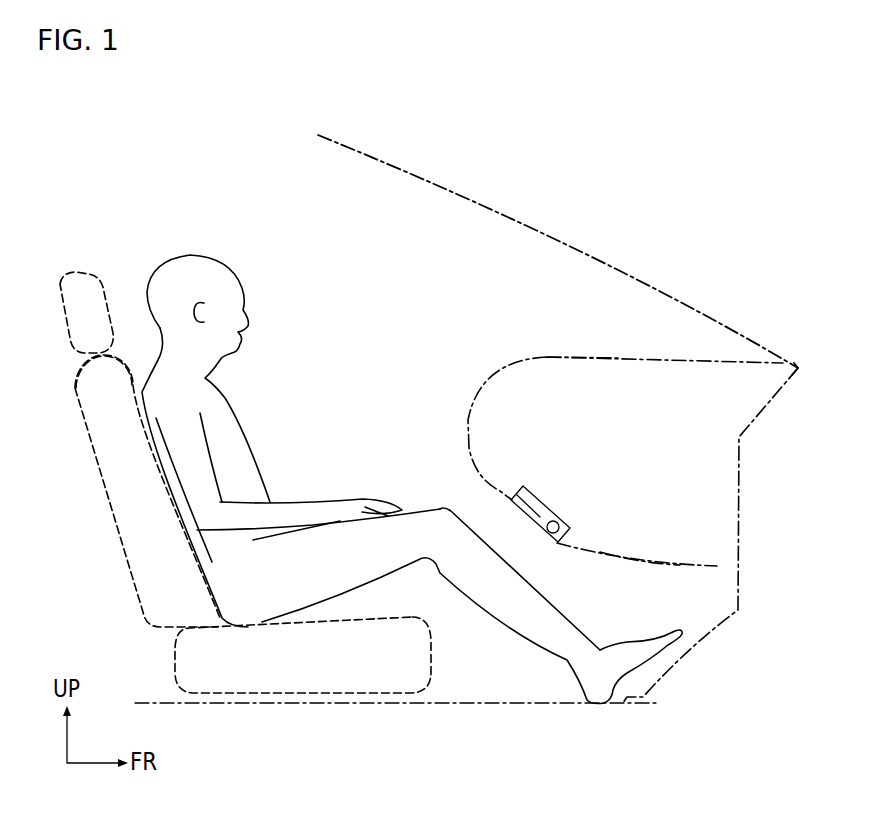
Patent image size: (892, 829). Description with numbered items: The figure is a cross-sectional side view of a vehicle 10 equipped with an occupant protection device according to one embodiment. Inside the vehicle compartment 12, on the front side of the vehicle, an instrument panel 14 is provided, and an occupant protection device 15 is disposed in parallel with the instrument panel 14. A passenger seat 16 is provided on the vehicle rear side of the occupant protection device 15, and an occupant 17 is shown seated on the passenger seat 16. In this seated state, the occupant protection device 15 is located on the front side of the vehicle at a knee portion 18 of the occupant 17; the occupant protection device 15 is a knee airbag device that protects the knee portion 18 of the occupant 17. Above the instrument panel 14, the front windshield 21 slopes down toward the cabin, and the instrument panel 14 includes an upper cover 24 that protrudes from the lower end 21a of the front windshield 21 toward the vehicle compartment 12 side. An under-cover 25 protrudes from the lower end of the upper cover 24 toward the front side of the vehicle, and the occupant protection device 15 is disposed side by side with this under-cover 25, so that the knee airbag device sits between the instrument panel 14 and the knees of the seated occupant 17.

The vehicle 10 is at (577, 124).
The vehicle compartment 12 is at (395, 289).
The instrument panel 14 is at (619, 358).
The occupant protection device 15 is at (526, 518).
The passenger seat 16 is at (120, 533).
The occupant 17 is at (157, 397).
The knee portion 18 is at (445, 510).
The front windshield 21 is at (549, 238).
The lower end of the front windshield 21a is at (783, 358).
The upper cover 24 is at (547, 357).
The under-cover 25 is at (607, 553).